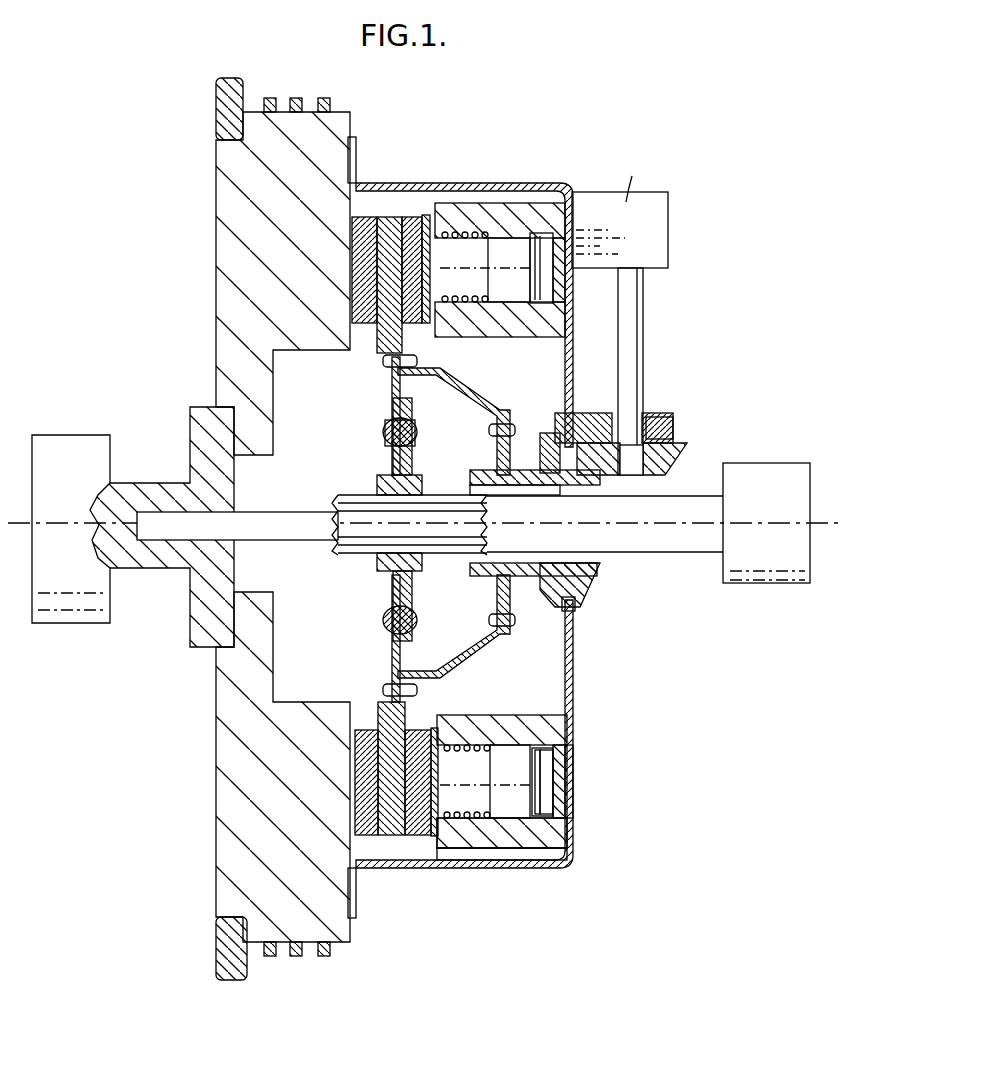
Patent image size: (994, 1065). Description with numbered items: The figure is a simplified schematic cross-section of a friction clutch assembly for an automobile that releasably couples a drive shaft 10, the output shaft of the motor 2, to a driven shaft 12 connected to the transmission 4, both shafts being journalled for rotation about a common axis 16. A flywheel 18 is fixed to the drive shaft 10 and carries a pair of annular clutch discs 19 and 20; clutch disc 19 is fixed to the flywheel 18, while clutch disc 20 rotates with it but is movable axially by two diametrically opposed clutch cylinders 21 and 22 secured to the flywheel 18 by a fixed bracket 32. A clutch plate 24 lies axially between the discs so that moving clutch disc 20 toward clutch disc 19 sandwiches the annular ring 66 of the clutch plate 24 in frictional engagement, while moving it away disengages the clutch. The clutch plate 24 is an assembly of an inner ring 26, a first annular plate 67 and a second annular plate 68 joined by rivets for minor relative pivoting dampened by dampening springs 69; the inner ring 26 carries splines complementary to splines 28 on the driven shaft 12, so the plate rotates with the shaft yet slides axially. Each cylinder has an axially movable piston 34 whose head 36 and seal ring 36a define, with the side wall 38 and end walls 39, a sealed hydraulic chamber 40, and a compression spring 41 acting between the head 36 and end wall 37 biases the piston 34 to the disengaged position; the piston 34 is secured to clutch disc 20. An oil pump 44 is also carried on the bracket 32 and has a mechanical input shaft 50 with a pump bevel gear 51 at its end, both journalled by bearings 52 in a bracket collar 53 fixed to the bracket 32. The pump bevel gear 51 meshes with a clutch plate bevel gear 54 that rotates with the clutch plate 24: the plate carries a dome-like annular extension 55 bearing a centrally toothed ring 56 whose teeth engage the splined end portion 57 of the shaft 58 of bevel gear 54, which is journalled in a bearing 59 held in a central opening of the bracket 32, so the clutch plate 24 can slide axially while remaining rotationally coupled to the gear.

The motor 2 is at (72, 624).
The transmission 4 is at (773, 575).
The drive shaft 10 is at (160, 556).
The driven shaft 12 is at (700, 554).
The axis 16 is at (814, 522).
The flywheel 18 is at (230, 703).
The clutch disc 19 is at (367, 217).
The clutch disc 20 is at (455, 184).
The clutch cylinder 21 is at (498, 342).
The clutch cylinder 22 is at (513, 710).
The clutch plate 24 is at (410, 217).
The inner ring 26 is at (386, 478).
The splines 28 is at (336, 503).
The bracket 32 is at (574, 343).
The piston 34 is at (458, 775).
The head 36 is at (513, 752).
The seal ring 36a is at (556, 836).
The end wall 37 is at (420, 836).
The side wall 38 is at (516, 850).
The end walls 39 is at (573, 790).
The hydraulic chamber 40 is at (549, 760).
The compression spring 41 is at (505, 848).
The oil pump 44 is at (668, 208).
The input shaft 50 is at (644, 370).
The pump bevel gear 51 is at (681, 460).
The bearings 52 is at (656, 414).
The bracket collar 53 is at (674, 430).
The clutch plate bevel gear 54 is at (594, 580).
The annular extension 55 is at (486, 400).
The toothed ring 56 is at (497, 458).
The splined end portion 57 is at (508, 486).
The shaft 58 is at (478, 564).
The bearing 59 is at (575, 607).
The annular ring 66 is at (380, 345).
The first annular plate 67 is at (411, 455).
The second annular plate 68 is at (386, 447).
The dampening springs 69 is at (386, 428).